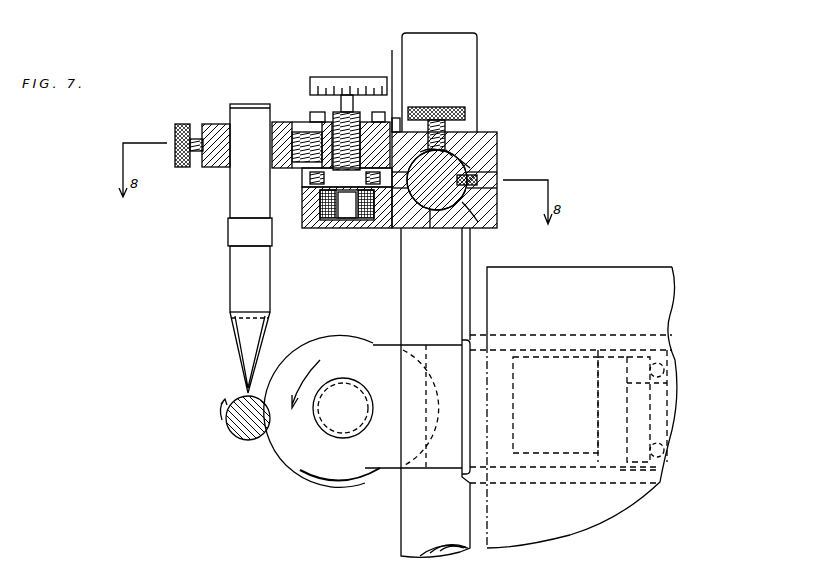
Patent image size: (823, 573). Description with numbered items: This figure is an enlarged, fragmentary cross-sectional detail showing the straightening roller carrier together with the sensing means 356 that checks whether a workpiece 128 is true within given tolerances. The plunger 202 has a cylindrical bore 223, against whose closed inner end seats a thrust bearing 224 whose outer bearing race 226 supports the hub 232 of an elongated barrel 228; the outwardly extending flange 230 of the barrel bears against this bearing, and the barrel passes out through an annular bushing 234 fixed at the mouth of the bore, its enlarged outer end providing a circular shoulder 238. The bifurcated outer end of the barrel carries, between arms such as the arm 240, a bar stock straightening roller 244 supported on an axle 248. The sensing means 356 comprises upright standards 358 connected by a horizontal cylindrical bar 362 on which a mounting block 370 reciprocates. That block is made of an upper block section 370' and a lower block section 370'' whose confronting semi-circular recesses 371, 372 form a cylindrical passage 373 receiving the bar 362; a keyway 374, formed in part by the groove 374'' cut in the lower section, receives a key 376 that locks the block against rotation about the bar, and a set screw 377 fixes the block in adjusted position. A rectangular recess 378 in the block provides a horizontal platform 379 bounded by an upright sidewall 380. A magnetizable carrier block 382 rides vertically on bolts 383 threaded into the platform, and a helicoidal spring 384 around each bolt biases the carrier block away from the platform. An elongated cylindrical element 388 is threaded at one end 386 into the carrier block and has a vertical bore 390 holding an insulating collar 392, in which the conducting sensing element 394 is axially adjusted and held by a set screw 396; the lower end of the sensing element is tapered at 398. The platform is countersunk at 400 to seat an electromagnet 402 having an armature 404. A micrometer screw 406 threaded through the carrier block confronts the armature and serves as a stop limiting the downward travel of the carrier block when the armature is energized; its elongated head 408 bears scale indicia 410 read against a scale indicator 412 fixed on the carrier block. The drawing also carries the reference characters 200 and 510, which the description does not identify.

The workpiece 128 is at (243, 440).
The housing 200 is at (516, 340).
The plunger 202 is at (470, 486).
The cylindrical bore 223 is at (598, 362).
The bearing 224 is at (652, 464).
The outer bearing race 226 is at (664, 354).
The elongated barrel 228 is at (566, 372).
The flange 230 is at (673, 325).
The hub 232 is at (648, 404).
The annular bushing 234 is at (528, 378).
The circular shoulder 238 is at (462, 340).
The arm 240 is at (368, 458).
The bar stock straightening roller 244 is at (372, 345).
The axle 248 is at (332, 430).
The sensing means 356 is at (244, 221).
The upright standards 358 is at (470, 33).
The horizontal cylindrical bar 362 is at (452, 228).
The mounting block 370 is at (483, 165).
The upper block section 370' is at (482, 136).
The lower block section 370'' is at (469, 209).
The semi-circular recess 371 is at (470, 136).
The semi-circular recess 372 is at (428, 226).
The cylindrical passage 373 is at (488, 150).
The keyway 374 is at (482, 176).
The groove 374'' is at (490, 229).
The key 376 is at (480, 182).
The set screw 377 is at (463, 108).
The rectangular recess 378 is at (316, 184).
The horizontal platform 379 is at (300, 212).
The upright sidewall 380 is at (300, 180).
The carrier block 382 is at (400, 128).
The bolts 383 is at (395, 118).
The helicoidal spring 384 is at (384, 226).
The end of cylindrical element 386 is at (286, 122).
The elongated cylindrical element 388 is at (215, 124).
The vertical bore 390 is at (304, 132).
The cylindrical collar 392 is at (224, 168).
The sensing element 394 is at (230, 210).
The set screw 396 is at (182, 167).
The tapered end 398 is at (242, 342).
The countersink 400 is at (334, 226).
The electromagnet 402 is at (362, 226).
The armature 404 is at (352, 226).
The micrometer screw 406 is at (336, 80).
The elongated head 408 is at (347, 77).
The scale indicia 410 is at (372, 77).
The scale indicator 412 is at (392, 50).
The cable 510 is at (248, 104).